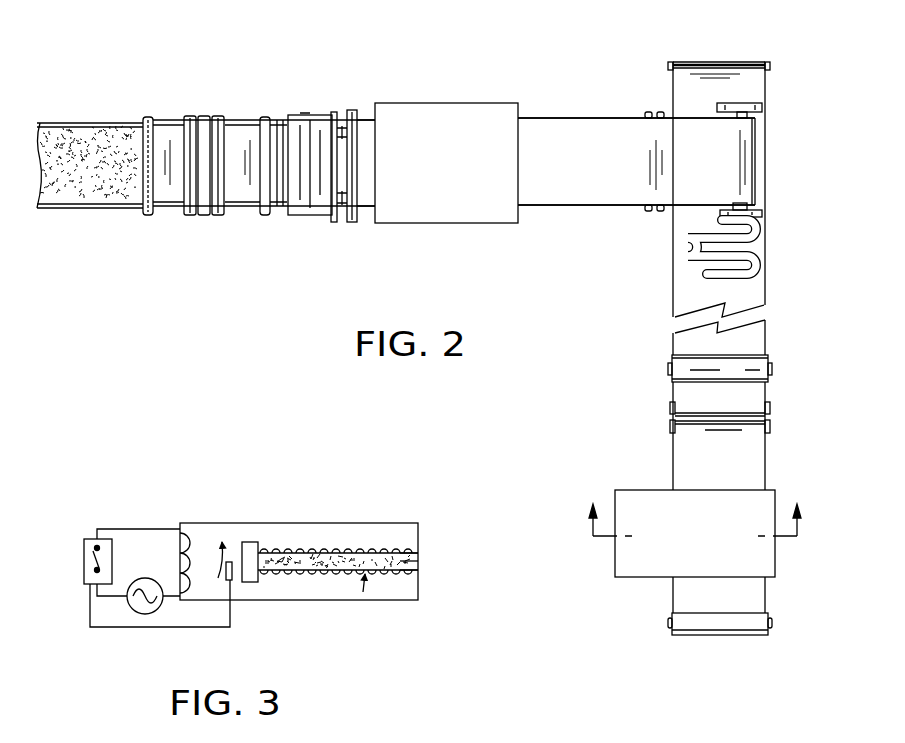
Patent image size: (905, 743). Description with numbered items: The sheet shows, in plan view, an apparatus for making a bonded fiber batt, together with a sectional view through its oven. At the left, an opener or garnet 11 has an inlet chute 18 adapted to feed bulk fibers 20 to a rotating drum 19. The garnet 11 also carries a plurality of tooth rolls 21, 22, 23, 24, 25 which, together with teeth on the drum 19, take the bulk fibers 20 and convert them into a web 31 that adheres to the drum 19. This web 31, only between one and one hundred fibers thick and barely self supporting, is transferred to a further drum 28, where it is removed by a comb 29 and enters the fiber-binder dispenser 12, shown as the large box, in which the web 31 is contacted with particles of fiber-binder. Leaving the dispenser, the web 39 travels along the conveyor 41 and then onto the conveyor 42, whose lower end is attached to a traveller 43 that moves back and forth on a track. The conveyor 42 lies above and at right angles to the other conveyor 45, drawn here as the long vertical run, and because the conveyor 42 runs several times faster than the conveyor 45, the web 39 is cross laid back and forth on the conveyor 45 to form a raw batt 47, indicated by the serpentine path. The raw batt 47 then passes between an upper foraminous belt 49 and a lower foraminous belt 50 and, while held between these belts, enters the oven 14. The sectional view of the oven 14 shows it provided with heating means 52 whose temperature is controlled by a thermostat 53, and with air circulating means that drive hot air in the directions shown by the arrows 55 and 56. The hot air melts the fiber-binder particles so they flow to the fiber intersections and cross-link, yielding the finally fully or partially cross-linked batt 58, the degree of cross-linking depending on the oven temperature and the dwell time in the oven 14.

In FIG. 2, the garnet 11 is at (200, 90).
In FIG. 2, the fiber-binder dispenser 12 is at (485, 100).
In FIG. 2, the oven 14 is at (650, 490).
In FIG. 3, the oven 14 is at (320, 528).
In FIG. 2, the inlet chute 18 is at (72, 123).
In FIG. 2, the rotating drum 19 is at (245, 125).
In FIG. 2, the bulk fibers 20 is at (112, 130).
In FIG. 2, the tooth roll 21 is at (147, 115).
In FIG. 2, the tooth roll 22 is at (190, 218).
In FIG. 2, the tooth roll 23 is at (204, 218).
In FIG. 2, the tooth roll 24 is at (225, 216).
In FIG. 2, the tooth roll 25 is at (266, 116).
In FIG. 2, the drum 28 is at (317, 216).
In FIG. 2, the comb 29 is at (355, 223).
In FIG. 2, the web 31 is at (367, 119).
In FIG. 2, the web 39 is at (537, 130).
In FIG. 2, the conveyor 41 is at (595, 125).
In FIG. 2, the conveyor 42 is at (705, 132).
In FIG. 2, the traveller 43 is at (763, 212).
In FIG. 2, the conveyor 45 is at (743, 90).
In FIG. 2, the raw batt 47 is at (763, 254).
In FIG. 3, the raw batt 47 is at (300, 571).
In FIG. 2, the upper foraminous belt 49 is at (768, 470).
In FIG. 3, the upper foraminous belt 49 is at (400, 551).
In FIG. 3, the lower foraminous belt 50 is at (400, 573).
In FIG. 3, the heating means 52 is at (180, 545).
In FIG. 3, the thermostat 53 is at (232, 582).
In FIG. 3, the arrow 55 is at (208, 556).
In FIG. 3, the arrow 56 is at (358, 548).
In FIG. 3, the batt 58 is at (413, 559).